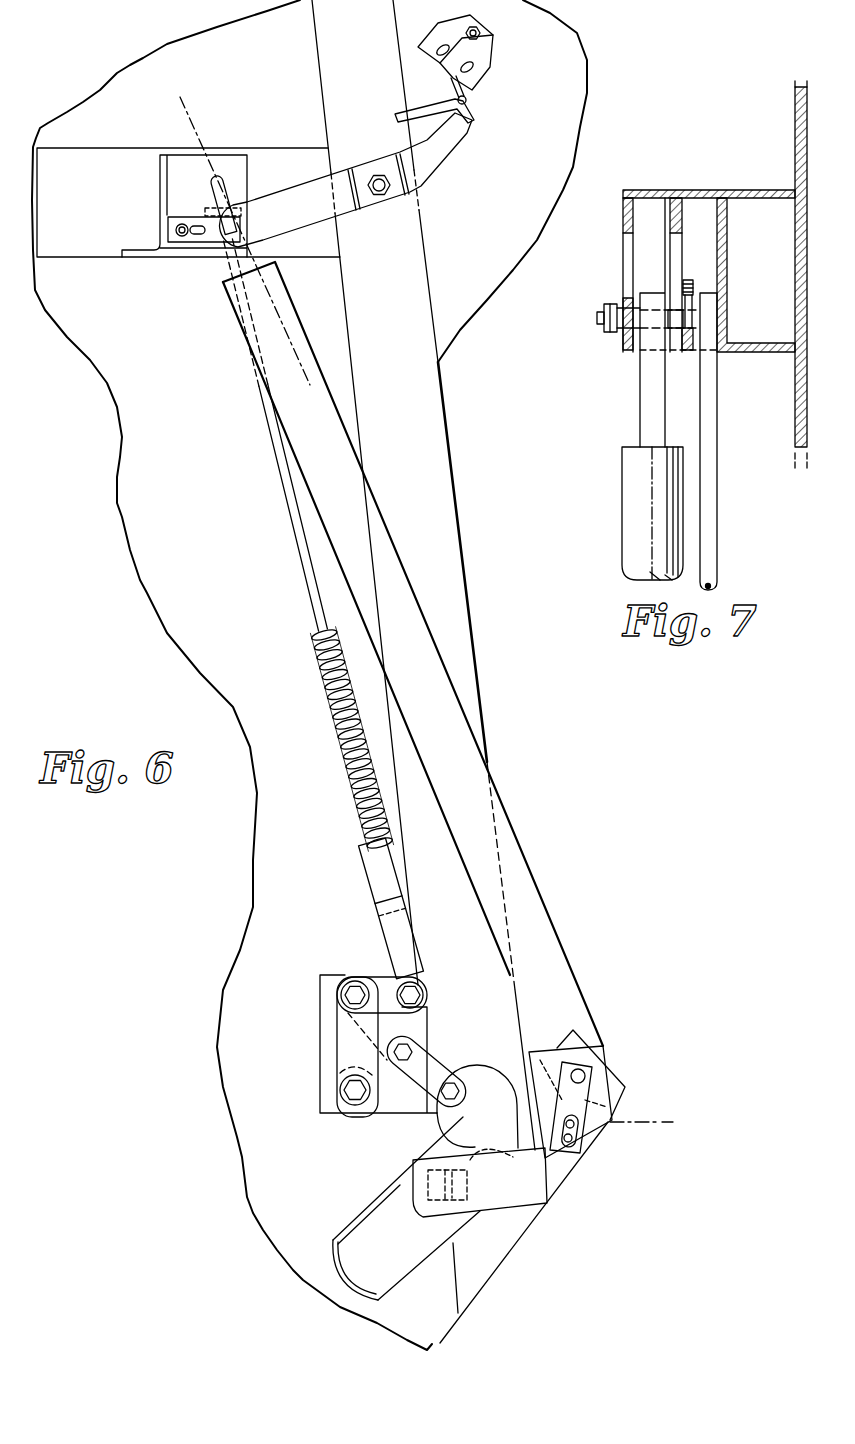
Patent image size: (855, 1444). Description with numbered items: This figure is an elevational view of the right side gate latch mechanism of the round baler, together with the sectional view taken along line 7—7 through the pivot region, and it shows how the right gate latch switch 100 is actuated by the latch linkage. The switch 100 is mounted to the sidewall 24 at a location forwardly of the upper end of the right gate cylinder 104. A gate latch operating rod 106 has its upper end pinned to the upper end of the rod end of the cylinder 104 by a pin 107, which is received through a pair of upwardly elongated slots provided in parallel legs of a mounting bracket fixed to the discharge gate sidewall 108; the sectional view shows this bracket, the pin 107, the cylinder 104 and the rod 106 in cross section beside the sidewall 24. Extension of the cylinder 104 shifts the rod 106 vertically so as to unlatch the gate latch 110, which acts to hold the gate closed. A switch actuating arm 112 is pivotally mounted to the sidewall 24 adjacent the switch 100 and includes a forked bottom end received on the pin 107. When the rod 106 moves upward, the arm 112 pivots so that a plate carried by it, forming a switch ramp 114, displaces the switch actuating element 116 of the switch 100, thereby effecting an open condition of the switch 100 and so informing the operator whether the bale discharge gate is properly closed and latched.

In FIG. 6, the sidewall 24 is at (495, 214).
In FIG. 7, the sidewall 24 is at (793, 153).
In FIG. 6, the right gate latch switch 100 is at (493, 64).
In FIG. 6, the right gate cylinder 104 is at (467, 775).
In FIG. 7, the right gate cylinder 104 is at (622, 493).
In FIG. 6, the gate latch operating rod 106 is at (297, 544).
In FIG. 7, the gate latch operating rod 106 is at (717, 466).
In FIG. 6, the pin 107 is at (231, 208).
In FIG. 7, the pin 107 is at (690, 314).
In FIG. 6, the discharge gate sidewall 108 is at (102, 219).
In FIG. 7, the discharge gate sidewall 108 is at (712, 233).
In FIG. 6, the gate latch 110 is at (390, 1145).
In FIG. 6, the switch actuating arm 112 is at (312, 207).
In FIG. 7, the switch actuating arm 112 is at (688, 352).
In FIG. 6, the switch ramp 114 is at (393, 115).
In FIG. 6, the switch actuating element 116 is at (452, 80).
In FIG. 6, the section line 7- 7 is at (192, 98).